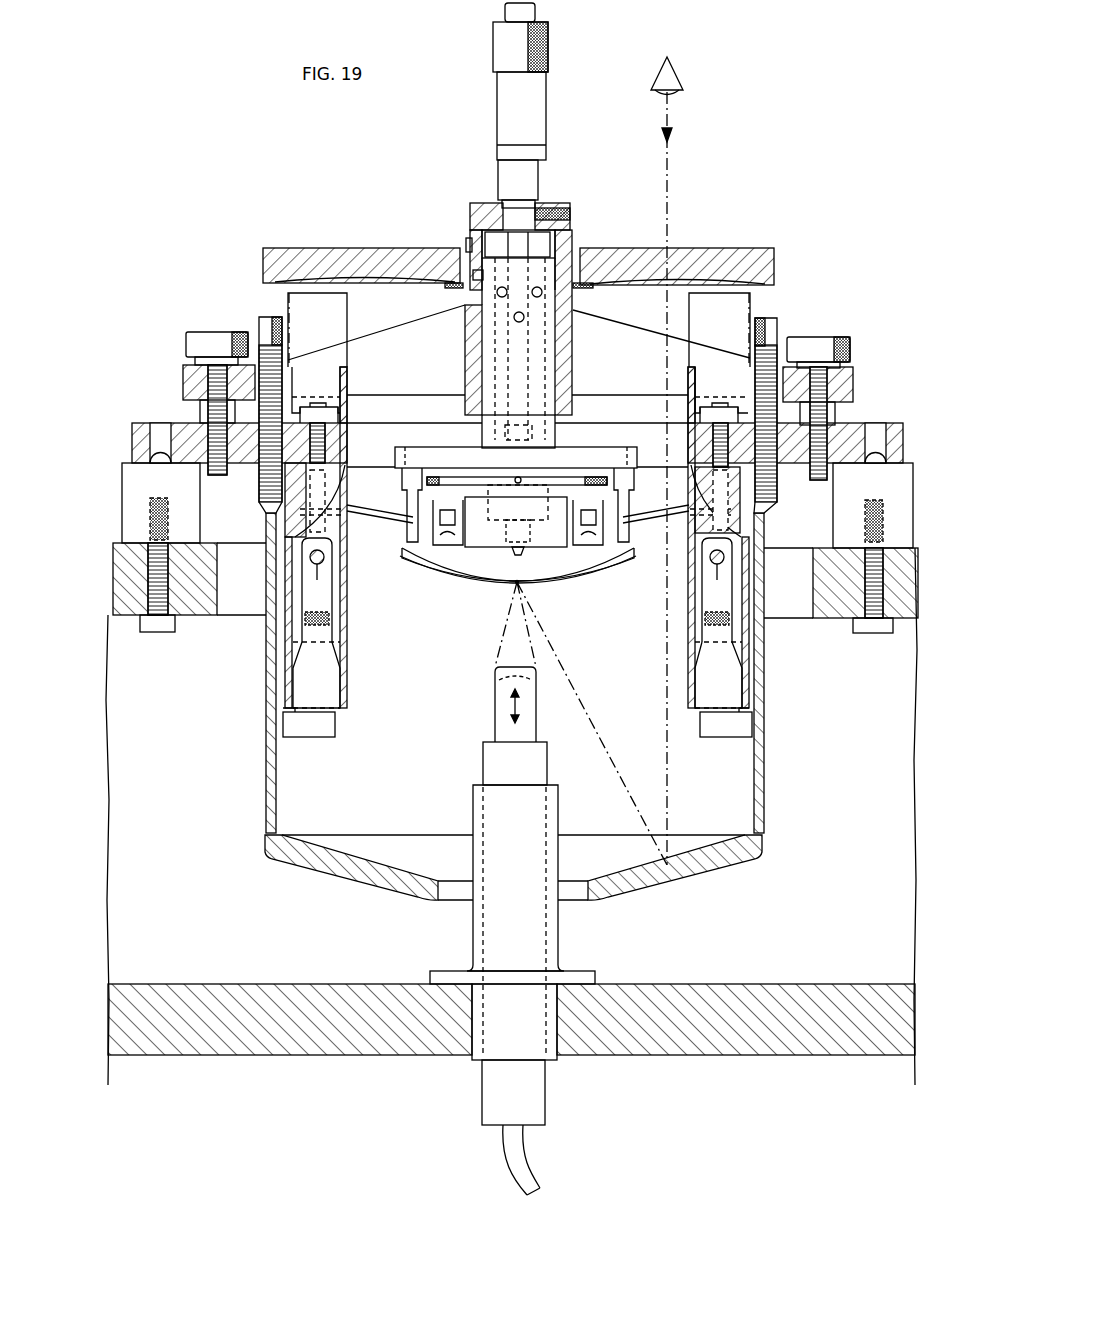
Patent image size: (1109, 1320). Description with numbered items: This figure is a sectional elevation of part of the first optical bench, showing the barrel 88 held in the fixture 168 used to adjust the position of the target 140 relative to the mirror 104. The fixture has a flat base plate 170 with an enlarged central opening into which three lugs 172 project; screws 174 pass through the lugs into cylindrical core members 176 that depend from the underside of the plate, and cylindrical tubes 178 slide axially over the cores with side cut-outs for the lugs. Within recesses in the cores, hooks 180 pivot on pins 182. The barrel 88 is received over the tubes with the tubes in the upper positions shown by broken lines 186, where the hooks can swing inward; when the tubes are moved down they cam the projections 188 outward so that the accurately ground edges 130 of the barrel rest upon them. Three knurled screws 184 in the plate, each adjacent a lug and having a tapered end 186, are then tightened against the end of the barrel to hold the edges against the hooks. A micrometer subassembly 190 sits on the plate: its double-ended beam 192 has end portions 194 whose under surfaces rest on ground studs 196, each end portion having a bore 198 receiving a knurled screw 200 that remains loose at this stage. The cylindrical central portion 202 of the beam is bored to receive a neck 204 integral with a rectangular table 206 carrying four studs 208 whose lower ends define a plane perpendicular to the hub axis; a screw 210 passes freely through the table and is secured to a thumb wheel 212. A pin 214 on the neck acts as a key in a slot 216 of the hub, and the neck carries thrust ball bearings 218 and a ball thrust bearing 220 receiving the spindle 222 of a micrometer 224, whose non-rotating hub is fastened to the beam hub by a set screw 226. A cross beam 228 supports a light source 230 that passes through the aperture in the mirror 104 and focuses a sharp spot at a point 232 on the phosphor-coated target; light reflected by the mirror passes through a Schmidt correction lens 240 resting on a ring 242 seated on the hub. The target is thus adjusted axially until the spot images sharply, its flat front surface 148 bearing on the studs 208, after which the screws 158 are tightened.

The barrel 88 is at (277, 796).
The mirror 104 is at (706, 880).
The edges 130 is at (306, 740).
The target 140 is at (500, 593).
The flat forward-facing surface 148 is at (492, 545).
The screws 158 is at (441, 538).
The fixture 168 is at (836, 298).
The base plate 170 is at (842, 428).
The lugs 172 is at (347, 444).
The screws 174 is at (319, 408).
The cylindrical core members 176 is at (348, 480).
The cylindrical tubes 178 is at (348, 600).
The hooks 180 is at (330, 694).
The pins 182 is at (316, 574).
The knurled screws 184 is at (779, 330).
The tapered end 186 is at (287, 300).
The projections 188 is at (284, 712).
The micrometer subassembly 190 is at (452, 218).
The double-ended beam 192 is at (447, 364).
The end portion 194 is at (185, 393).
The studs 196 is at (200, 414).
The bore 198 is at (208, 377).
The knurled screws 200 is at (215, 335).
The central portion 202 is at (573, 376).
The cylindrical neck portion 204 is at (556, 430).
The rectangular table portion 206 is at (430, 452).
The studs 208 is at (409, 507).
The screw 210 is at (527, 427).
The thumb wheel 212 is at (484, 478).
The screw or pin 214 is at (476, 282).
The slot 216 is at (470, 244).
The thrust ball bearings 218 is at (541, 297).
The ball thrust bearing 220 is at (524, 320).
The spindle 222 is at (535, 249).
The micrometer 224 is at (553, 97).
The set screw 226 is at (572, 214).
The cross beam 228 is at (736, 984).
The light source 230 is at (481, 763).
The point 232 is at (522, 586).
The Schmidt correction lens 240 is at (686, 250).
The ring 242 is at (584, 289).